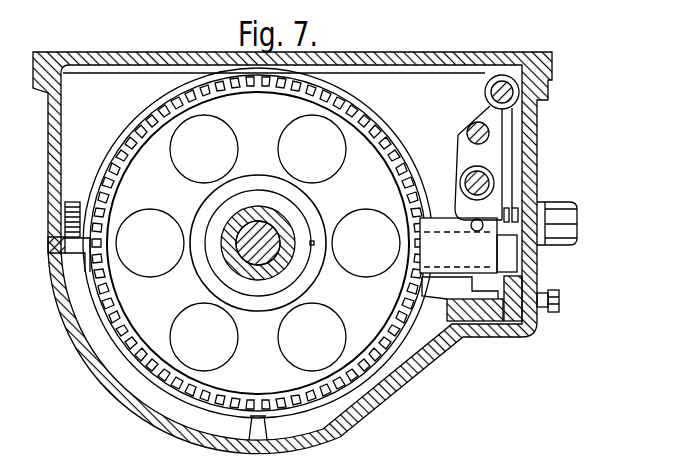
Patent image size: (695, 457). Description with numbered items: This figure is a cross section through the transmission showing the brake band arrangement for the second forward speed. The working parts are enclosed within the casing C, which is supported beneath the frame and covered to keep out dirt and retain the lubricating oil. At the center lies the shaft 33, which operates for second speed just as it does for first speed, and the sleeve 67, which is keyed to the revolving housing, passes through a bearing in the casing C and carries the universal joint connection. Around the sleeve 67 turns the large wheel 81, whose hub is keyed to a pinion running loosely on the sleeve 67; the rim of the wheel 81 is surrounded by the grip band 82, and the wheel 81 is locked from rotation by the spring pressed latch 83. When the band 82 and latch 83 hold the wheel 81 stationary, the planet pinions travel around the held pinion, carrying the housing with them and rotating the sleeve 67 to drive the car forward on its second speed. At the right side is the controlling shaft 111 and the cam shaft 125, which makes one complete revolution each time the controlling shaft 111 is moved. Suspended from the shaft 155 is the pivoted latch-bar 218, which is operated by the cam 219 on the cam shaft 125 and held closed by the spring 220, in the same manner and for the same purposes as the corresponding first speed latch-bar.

The casing C is at (455, 58).
The shaft 33 is at (288, 265).
The sleeve 67 is at (260, 273).
The wheel 81 is at (258, 243).
The grip band 82 is at (383, 130).
The spring pressed latch 83 is at (502, 248).
The controlling shaft 111 is at (490, 130).
The cam shaft 125 is at (480, 182).
The shaft 155 is at (508, 90).
The pivoted latch-bar 218 is at (508, 147).
The cam 219 is at (461, 176).
The spring 220 is at (548, 243).